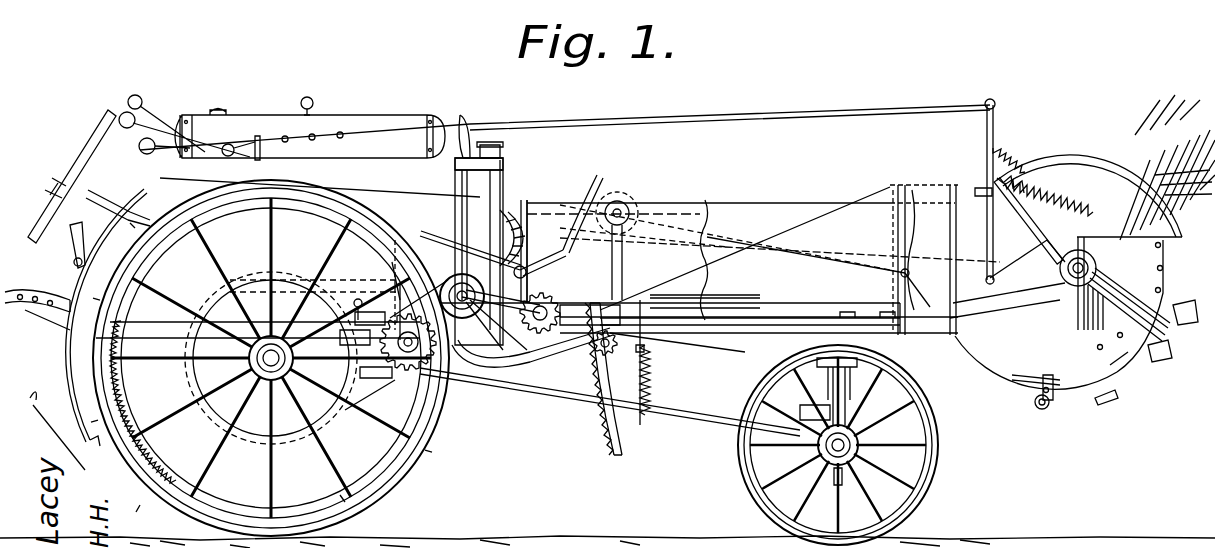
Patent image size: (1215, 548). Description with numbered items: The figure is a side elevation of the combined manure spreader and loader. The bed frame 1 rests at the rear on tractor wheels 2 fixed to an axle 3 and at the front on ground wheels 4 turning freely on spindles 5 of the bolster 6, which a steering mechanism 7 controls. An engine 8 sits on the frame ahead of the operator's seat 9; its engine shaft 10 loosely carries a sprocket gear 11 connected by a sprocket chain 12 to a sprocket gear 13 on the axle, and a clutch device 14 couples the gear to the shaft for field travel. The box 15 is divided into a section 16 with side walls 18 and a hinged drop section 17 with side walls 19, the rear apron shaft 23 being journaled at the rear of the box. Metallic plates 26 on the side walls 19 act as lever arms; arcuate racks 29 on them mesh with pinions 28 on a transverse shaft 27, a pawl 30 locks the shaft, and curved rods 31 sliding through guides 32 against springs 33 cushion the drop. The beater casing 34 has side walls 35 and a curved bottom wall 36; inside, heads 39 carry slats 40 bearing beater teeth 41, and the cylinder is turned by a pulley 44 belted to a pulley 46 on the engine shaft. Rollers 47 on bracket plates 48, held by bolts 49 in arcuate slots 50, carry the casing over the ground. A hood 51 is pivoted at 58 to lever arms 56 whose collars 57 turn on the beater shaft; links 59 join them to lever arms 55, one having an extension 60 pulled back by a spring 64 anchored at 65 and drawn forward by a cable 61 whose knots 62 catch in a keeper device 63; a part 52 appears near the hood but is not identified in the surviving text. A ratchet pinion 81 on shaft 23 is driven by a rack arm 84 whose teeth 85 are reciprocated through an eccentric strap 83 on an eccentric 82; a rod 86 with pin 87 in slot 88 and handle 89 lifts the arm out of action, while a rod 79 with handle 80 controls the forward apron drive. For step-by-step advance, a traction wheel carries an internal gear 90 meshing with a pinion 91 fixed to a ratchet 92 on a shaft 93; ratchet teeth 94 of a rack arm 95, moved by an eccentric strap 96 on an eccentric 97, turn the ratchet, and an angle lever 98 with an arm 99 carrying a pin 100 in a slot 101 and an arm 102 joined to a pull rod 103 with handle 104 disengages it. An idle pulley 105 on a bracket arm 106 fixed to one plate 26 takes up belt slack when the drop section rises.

The bed frame 1 is at (168, 306).
The tractor wheels 2 is at (435, 454).
The axle 3 is at (268, 382).
The ground wheels 4 is at (937, 452).
The spindles 5 is at (860, 441).
The bolster 6 is at (850, 392).
The steering mechanism 7 is at (700, 415).
The engine 8 is at (500, 158).
The operator's seat 9 is at (35, 292).
The engine shaft 10 is at (517, 356).
The sprocket gear 11 is at (542, 296).
The sprocket chain 12 is at (348, 278).
The sprocket gear 13 is at (300, 308).
The clutch device 14 is at (470, 120).
The box 15 is at (735, 212).
The box section 16 is at (800, 210).
The drop section 17 is at (958, 195).
The side walls 18 is at (672, 207).
The side walls 19 is at (932, 200).
The shaft 23 is at (562, 312).
The metallic plates 26 is at (750, 300).
The shaft 27 is at (600, 388).
The pinions 28 is at (640, 345).
The arcuate racks 29 is at (593, 377).
The pawl 30 is at (606, 330).
The curved rods 31 is at (700, 298).
The guides 32 is at (705, 304).
The spring 33 is at (652, 378).
The casing 34 is at (1090, 178).
The side walls 35 is at (1129, 226).
The bottom wall 36 is at (1000, 376).
The heads 39 is at (1128, 352).
The slats 40 is at (1195, 308).
The beater teeth 41 is at (1160, 350).
The pulley 44 is at (1129, 304).
The pulley 46 is at (530, 228).
The rollers 47 is at (1048, 407).
The bracket plates 48 is at (1053, 393).
The bolts 49 is at (1055, 378).
The arcuate slots 50 is at (1040, 378).
The hood 51 is at (1075, 155).
The standing crop 52 is at (1167, 167).
The lever arm 55 is at (995, 218).
The lever arms 56 is at (1035, 228).
The collars 57 is at (1147, 282).
The pivotal connection 58 is at (1010, 158).
The connecting bars 59 is at (1027, 259).
The upward extension 60 is at (995, 127).
The flexible element 61 is at (962, 100).
The knots 62 is at (338, 135).
The keeper device 63 is at (258, 136).
The spring 64 is at (1030, 180).
The spring connection 65 is at (1093, 212).
The rod 79 is at (400, 185).
The handle 80 is at (142, 153).
The ratchet pinion 81 is at (572, 305).
The eccentric 82 is at (512, 192).
The eccentric strap 83 is at (475, 320).
The rack arm 84 is at (529, 238).
The rack teeth 85 is at (570, 258).
The rod 86 is at (470, 248).
The pin 87 is at (597, 186).
The slot 88 is at (617, 201).
The handle 89 is at (128, 100).
The internal gear 90 is at (405, 372).
The pinion 91 is at (380, 380).
The ratchet 92 is at (350, 340).
The shaft 93 is at (355, 402).
The ratchet teeth 94 is at (392, 285).
The rack arm 95 is at (458, 275).
The eccentric strap 96 is at (503, 190).
The eccentric 97 is at (530, 200).
The angle lever 98 is at (357, 318).
The arm 99 is at (354, 301).
The pin 100 is at (399, 305).
The slot 101 is at (392, 264).
The arm 102 is at (345, 322).
The pull rod 103 is at (278, 240).
The handle 104 is at (143, 105).
The idle pulley 105 is at (632, 198).
The bracket arm 106 is at (630, 268).